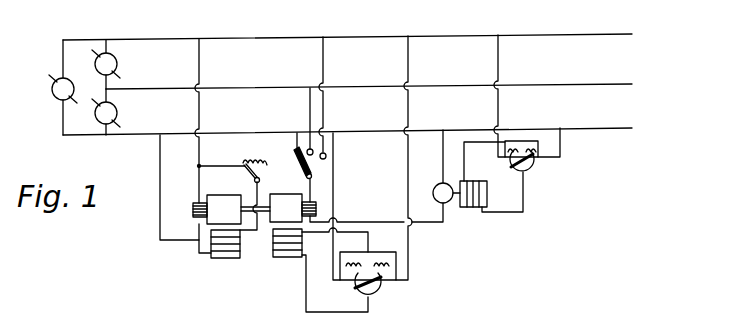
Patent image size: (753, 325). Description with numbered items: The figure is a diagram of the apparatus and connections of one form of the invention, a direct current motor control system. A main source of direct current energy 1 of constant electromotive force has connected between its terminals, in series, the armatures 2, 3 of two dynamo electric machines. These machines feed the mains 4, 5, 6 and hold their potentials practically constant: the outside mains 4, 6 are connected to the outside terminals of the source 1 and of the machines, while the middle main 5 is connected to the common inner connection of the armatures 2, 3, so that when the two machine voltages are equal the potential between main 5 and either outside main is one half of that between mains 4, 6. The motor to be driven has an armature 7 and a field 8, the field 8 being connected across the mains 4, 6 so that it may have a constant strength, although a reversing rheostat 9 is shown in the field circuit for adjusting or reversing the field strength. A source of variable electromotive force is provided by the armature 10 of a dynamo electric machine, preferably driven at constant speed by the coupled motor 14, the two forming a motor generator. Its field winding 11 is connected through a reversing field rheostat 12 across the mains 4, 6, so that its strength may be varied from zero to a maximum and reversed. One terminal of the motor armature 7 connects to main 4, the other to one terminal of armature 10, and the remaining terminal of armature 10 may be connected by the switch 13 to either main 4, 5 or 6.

The main source of direct current energy 1 is at (53, 87).
The armature of dynamo electric machine 2 is at (109, 112).
The armature of dynamo electric machine 3 is at (109, 64).
The main 4 is at (347, 124).
The main 5 is at (369, 80).
The main 6 is at (347, 30).
The motor armature 7 is at (432, 202).
The motor field 8 is at (488, 183).
The reversing rheostat 9 is at (532, 154).
The armature of dynamo electric machine 10 is at (322, 208).
The field winding 11 is at (314, 270).
The reversing field rheostat 12 is at (370, 280).
The switch 13 is at (314, 145).
The motor 14 is at (219, 209).